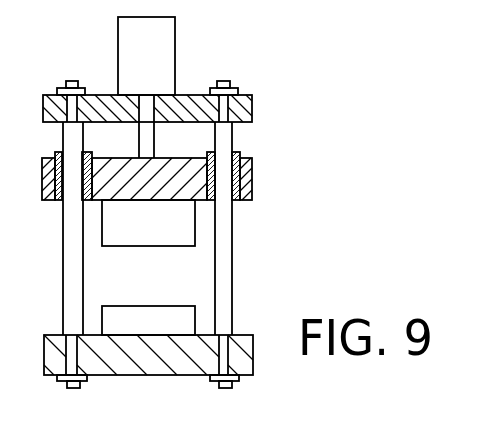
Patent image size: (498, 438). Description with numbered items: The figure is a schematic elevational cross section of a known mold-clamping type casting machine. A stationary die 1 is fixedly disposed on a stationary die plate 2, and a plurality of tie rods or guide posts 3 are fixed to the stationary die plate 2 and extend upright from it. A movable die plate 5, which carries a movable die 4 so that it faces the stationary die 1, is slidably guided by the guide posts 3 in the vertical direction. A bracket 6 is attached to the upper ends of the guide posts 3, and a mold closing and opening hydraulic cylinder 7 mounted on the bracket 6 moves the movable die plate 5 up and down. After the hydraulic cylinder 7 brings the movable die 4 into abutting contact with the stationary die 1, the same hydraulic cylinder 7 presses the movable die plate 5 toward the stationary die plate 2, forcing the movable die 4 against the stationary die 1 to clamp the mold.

The stationary die 1 is at (125, 318).
The stationary die plate 2 is at (152, 365).
The guide posts 3 is at (66, 283).
The movable die 4 is at (160, 232).
The movable die plate 5 is at (252, 177).
The bracket 6 is at (99, 100).
The mold closing and opening hydraulic cylinder 7 is at (176, 36).